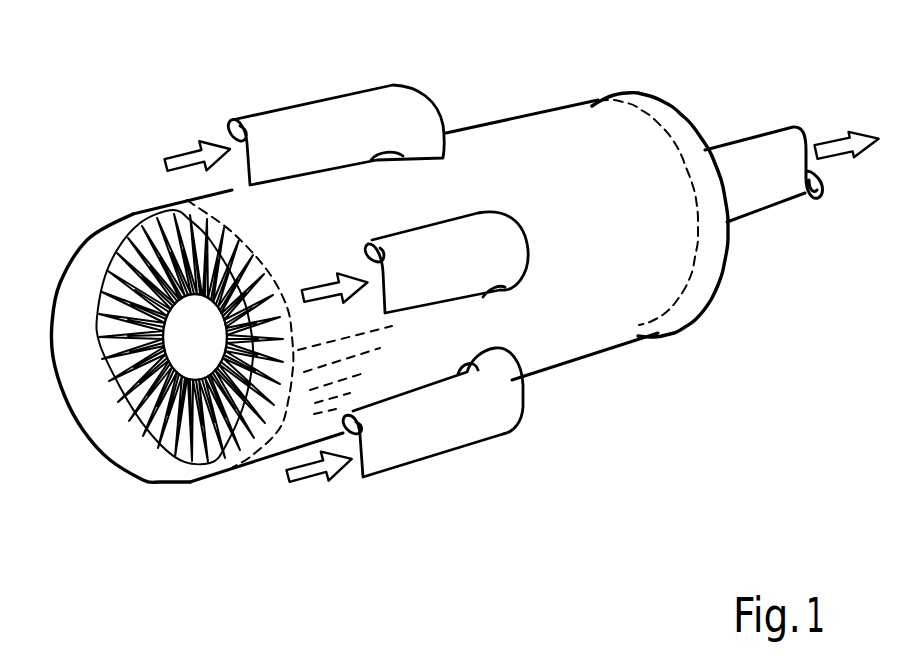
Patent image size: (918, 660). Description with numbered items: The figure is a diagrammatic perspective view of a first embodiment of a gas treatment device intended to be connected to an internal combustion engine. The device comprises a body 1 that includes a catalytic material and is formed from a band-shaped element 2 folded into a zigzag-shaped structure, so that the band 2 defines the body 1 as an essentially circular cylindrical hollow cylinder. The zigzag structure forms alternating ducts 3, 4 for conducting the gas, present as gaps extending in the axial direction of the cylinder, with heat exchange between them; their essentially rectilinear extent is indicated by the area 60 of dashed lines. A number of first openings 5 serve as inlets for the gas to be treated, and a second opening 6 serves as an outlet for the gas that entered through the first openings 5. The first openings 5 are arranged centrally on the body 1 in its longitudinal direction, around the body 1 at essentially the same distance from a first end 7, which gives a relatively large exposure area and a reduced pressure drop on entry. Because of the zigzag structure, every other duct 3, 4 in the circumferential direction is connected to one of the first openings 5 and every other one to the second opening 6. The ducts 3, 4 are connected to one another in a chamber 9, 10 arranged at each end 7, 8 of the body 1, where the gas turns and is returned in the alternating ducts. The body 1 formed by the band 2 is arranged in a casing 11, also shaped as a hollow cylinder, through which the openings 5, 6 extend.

The body 1 is at (186, 446).
The band-shaped element 2 is at (178, 446).
The duct 3 is at (162, 403).
The duct 4 is at (128, 406).
The first opening 5 is at (413, 115).
The second opening 6 is at (767, 178).
The first end 7 is at (197, 192).
The end 8 is at (650, 127).
The chamber 9 is at (90, 250).
The chamber 10 is at (707, 273).
The casing 11 is at (603, 353).
The area of dashed lines 60 is at (318, 387).